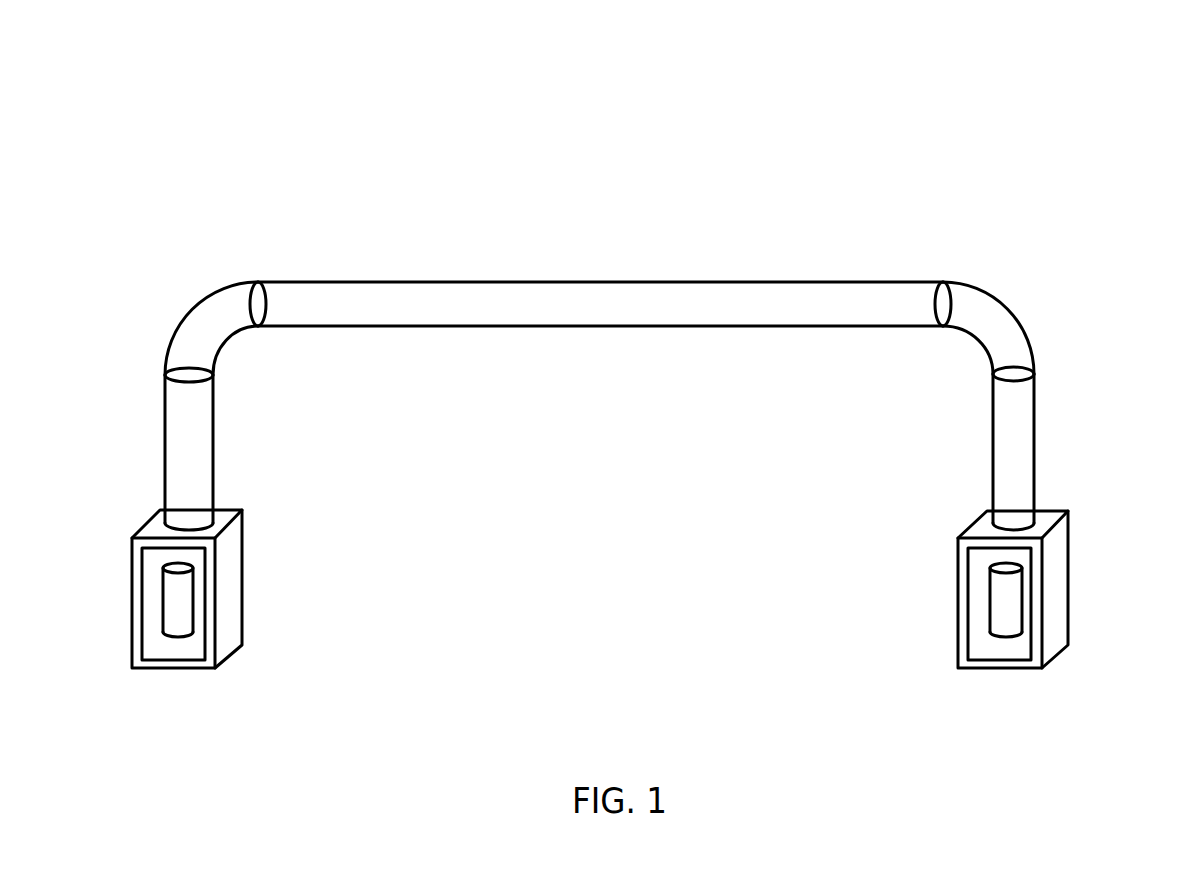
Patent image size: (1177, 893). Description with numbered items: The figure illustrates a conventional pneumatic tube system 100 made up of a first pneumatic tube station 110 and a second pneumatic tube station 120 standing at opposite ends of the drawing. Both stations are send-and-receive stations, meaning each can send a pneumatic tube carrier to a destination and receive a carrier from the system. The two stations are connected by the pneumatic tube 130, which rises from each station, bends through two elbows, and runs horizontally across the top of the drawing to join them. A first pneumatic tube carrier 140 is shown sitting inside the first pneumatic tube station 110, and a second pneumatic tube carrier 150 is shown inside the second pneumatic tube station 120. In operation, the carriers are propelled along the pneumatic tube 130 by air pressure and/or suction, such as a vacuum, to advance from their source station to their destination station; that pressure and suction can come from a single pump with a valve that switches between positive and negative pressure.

The pneumatic tube system 100 is at (172, 117).
The first pneumatic tube station 110 is at (131, 576).
The second pneumatic tube station 120 is at (957, 567).
The pneumatic tube 130 is at (390, 282).
The first pneumatic tube carrier 140 is at (235, 575).
The second pneumatic tube carrier 150 is at (1063, 580).